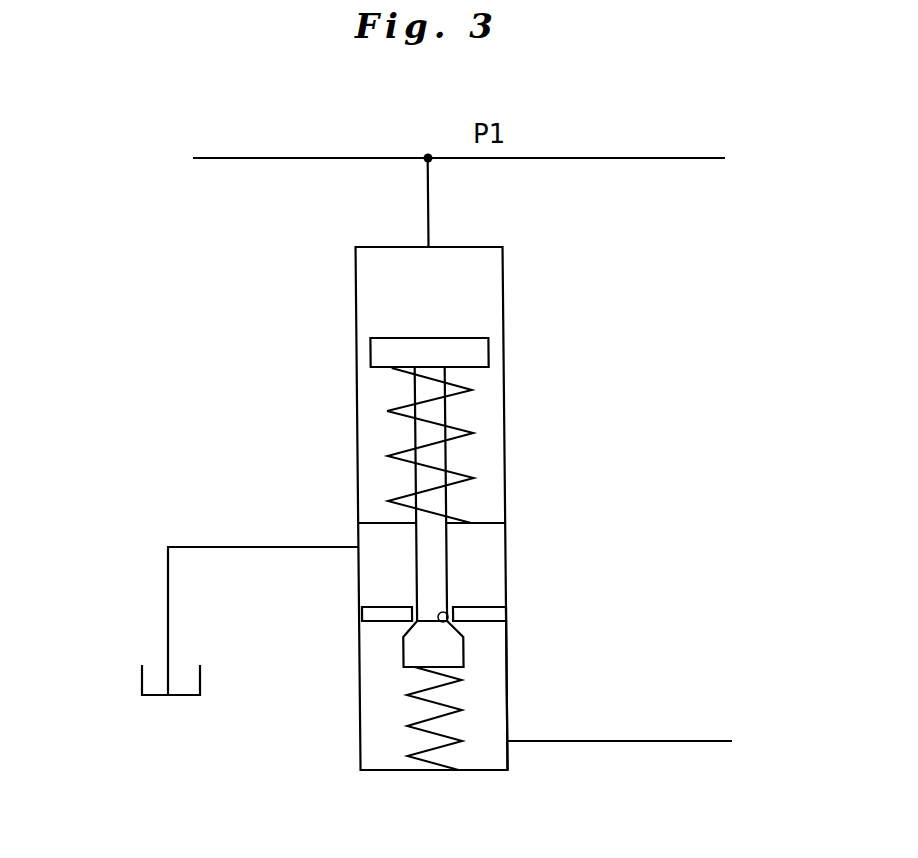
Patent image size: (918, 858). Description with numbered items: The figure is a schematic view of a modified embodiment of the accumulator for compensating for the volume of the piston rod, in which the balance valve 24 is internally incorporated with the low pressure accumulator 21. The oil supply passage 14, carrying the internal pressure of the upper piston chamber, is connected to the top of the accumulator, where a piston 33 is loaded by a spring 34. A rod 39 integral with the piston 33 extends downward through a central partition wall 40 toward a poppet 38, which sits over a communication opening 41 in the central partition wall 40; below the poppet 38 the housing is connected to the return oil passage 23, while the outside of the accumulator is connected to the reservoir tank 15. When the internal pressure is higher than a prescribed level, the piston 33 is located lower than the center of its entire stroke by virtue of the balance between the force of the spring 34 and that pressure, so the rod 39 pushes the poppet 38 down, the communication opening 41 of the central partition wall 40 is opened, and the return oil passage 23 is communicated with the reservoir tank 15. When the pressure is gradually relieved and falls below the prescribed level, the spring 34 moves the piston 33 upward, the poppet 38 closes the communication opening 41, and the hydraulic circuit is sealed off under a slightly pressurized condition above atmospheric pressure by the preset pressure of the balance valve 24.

The oil supply passage 14 is at (620, 158).
The low pressure accumulator 21 is at (519, 327).
The piston 33 is at (483, 348).
The spring 34 is at (458, 432).
The rod 39 is at (443, 565).
The central partition wall 40 is at (362, 614).
The poppet 38 is at (410, 648).
The communication opening 41 is at (447, 621).
The balance valve 24 is at (513, 630).
The reservoir tank 15 is at (142, 678).
The return oil passage 23 is at (650, 742).